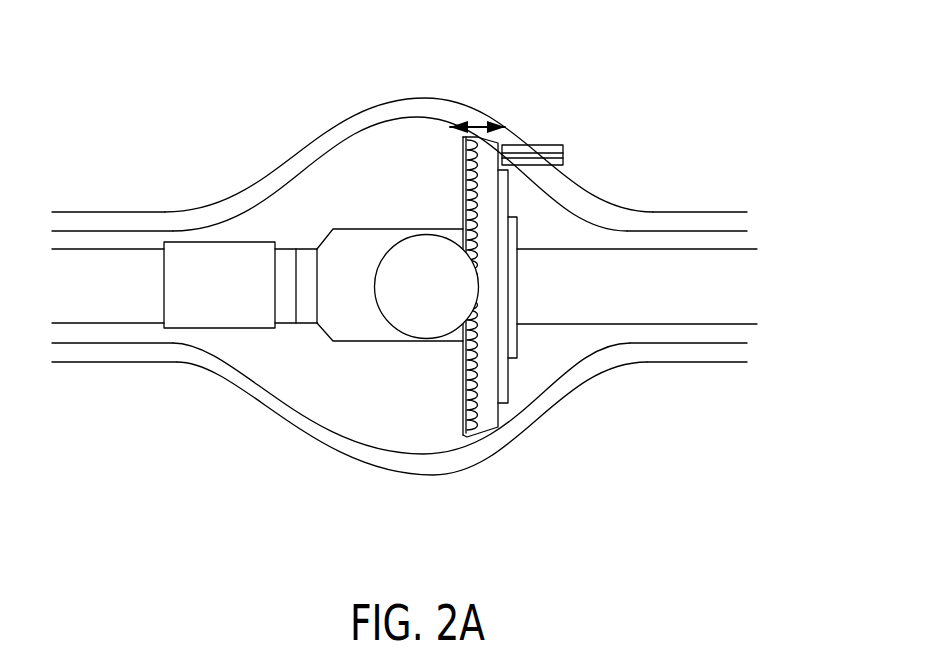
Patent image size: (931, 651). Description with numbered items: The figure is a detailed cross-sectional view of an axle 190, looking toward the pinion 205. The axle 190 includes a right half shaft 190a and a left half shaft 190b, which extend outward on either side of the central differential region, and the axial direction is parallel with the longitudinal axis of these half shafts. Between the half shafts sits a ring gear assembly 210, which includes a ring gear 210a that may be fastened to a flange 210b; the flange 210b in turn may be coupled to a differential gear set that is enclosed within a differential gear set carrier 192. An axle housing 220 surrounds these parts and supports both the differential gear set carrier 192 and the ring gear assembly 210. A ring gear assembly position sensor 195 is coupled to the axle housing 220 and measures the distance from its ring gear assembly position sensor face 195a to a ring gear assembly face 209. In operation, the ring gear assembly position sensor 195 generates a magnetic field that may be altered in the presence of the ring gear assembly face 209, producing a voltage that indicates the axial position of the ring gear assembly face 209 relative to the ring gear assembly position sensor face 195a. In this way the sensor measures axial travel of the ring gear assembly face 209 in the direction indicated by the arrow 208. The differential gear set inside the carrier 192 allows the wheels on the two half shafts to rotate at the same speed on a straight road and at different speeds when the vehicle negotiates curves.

The axle 190 is at (562, 442).
The right half shaft 190a is at (127, 323).
The left half shaft 190b is at (708, 324).
The differential gear set carrier 192 is at (347, 230).
The ring gear assembly position sensor 195 is at (592, 112).
The ring gear assembly position sensor face 195a is at (563, 156).
The pinion 205 is at (392, 327).
The arrow 208 is at (484, 125).
The ring gear assembly face 209 is at (503, 145).
The ring gear assembly 210 is at (433, 281).
The ring gear 210a is at (485, 178).
The flange 210b is at (508, 203).
The axle housing 220 is at (728, 212).